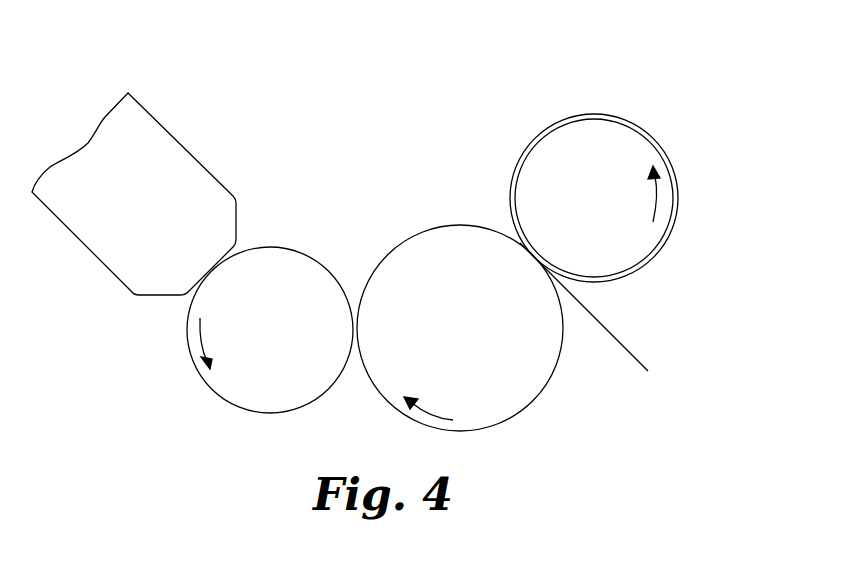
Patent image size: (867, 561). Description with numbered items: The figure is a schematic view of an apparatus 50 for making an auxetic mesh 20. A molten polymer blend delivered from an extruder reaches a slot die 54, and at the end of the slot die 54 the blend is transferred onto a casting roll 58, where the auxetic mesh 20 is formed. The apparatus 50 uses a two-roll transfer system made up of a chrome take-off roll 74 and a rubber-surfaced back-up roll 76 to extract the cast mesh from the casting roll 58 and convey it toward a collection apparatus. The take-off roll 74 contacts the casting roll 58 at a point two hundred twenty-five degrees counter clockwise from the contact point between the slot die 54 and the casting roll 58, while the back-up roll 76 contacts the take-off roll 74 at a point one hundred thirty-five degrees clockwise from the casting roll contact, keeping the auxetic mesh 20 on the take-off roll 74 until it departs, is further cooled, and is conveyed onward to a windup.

The apparatus 50 is at (640, 79).
The slot die 54 is at (127, 221).
The casting roll 58 is at (258, 342).
The take-off roll 74 is at (443, 347).
The back-up roll 76 is at (580, 211).
The auxetic mesh 20 is at (623, 343).